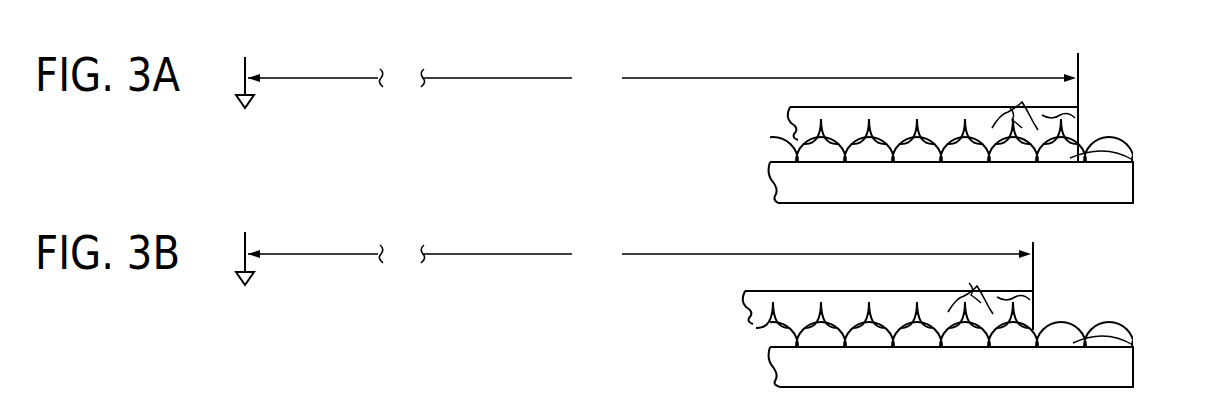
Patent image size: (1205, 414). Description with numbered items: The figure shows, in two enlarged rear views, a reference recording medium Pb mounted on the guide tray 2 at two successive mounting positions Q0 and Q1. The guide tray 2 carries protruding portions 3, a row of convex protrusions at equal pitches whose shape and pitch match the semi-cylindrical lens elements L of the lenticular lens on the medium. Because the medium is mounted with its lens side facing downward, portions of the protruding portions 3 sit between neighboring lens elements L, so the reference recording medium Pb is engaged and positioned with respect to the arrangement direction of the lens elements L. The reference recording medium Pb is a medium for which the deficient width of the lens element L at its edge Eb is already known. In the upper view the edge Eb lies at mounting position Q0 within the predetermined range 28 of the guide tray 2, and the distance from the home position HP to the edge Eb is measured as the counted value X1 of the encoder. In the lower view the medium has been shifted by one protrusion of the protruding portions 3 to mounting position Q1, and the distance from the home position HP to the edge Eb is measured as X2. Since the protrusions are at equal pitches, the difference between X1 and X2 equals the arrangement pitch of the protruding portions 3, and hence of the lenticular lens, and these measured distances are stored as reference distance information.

In FIG. 3A, the guide tray 2 is at (776, 183).
In FIG. 3B, the guide tray 2 is at (778, 371).
In FIG. 3A, the protruding portions 3 is at (1130, 159).
In FIG. 3B, the protruding portions 3 is at (1133, 342).
In FIG. 3A, the predetermined range 28 is at (917, 208).
In FIG. 3B, the predetermined range 28 is at (1112, 403).
In FIG. 3A, the home position HP is at (248, 69).
In FIG. 3B, the home position HP is at (248, 310).
In FIG. 3A, the counted value of the encoder at mounting position Q0 X1 is at (663, 108).
In FIG. 3B, the counted value of the encoder at mounting position Q1 X2 is at (640, 286).
In FIG. 3A, the reference recording medium Pb is at (794, 128).
In FIG. 3B, the reference recording medium Pb is at (754, 312).
In FIG. 3A, the edge Eb is at (1078, 117).
In FIG. 3B, the edge Eb is at (1035, 296).
In FIG. 3A, the lens element L is at (1033, 107).
In FIG. 3B, the lens element L is at (989, 287).
In FIG. 3A, the mounting position Q0 is at (1149, 134).
In FIG. 3B, the mounting position Q1 is at (1105, 314).